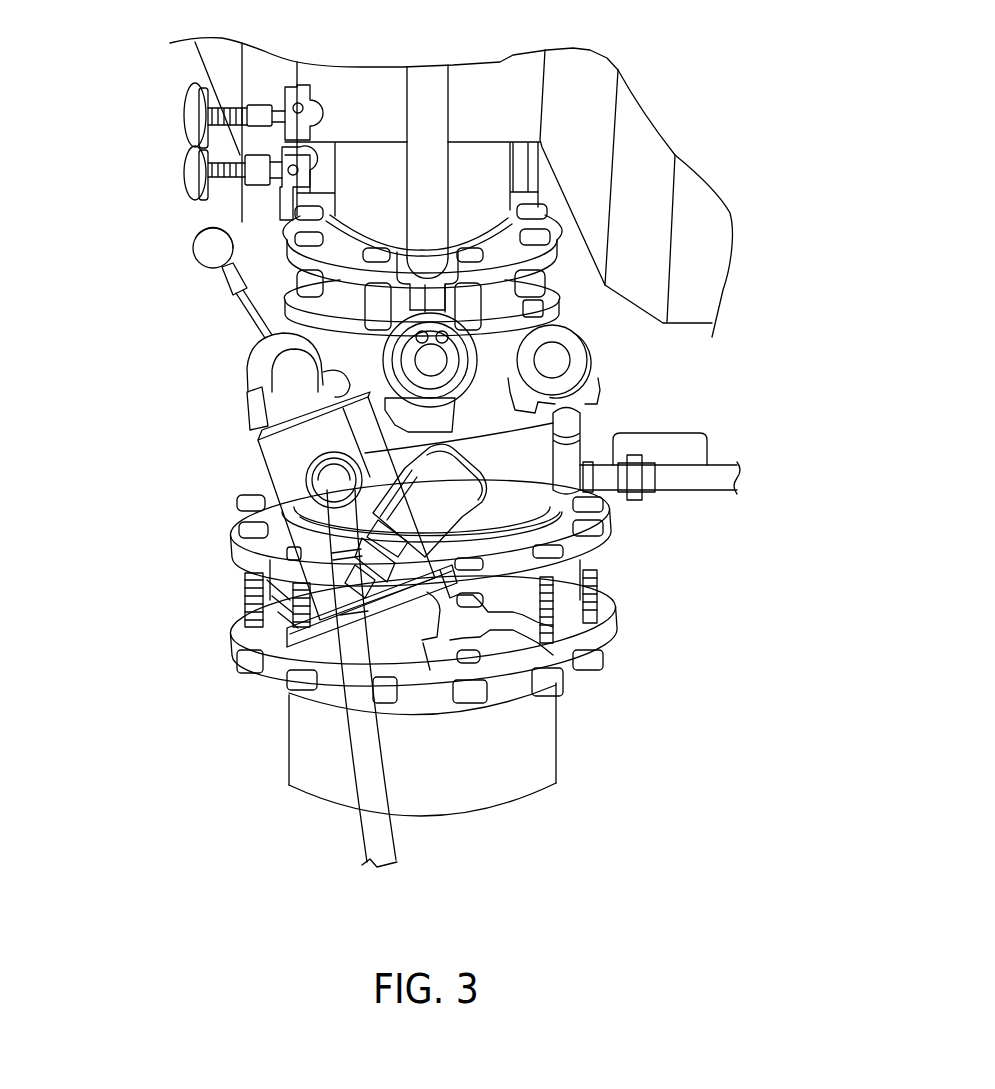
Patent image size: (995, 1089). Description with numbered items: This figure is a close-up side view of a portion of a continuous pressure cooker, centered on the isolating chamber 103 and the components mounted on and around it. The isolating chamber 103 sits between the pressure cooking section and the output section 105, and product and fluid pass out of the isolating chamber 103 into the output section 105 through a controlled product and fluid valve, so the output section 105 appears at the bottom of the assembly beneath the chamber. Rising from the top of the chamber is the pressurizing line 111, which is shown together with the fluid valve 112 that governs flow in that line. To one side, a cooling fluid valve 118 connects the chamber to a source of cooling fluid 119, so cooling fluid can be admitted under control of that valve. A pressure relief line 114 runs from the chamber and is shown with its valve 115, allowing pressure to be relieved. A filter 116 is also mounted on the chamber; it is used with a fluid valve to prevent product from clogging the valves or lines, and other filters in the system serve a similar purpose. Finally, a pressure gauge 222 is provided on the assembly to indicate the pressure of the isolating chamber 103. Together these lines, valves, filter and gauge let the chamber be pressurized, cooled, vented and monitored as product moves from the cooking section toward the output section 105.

The pressurizing line 111 is at (430, 115).
The pressure gauge 222 is at (192, 243).
The fluid valve 112 is at (447, 358).
The cooling fluid valve 118 is at (568, 365).
The source of cooling fluid 119 is at (732, 475).
The filter 116 is at (295, 448).
The pressure relief line 114 is at (365, 775).
The valve 115 is at (433, 517).
The isolating chamber 103 is at (517, 477).
The output section 105 is at (505, 775).